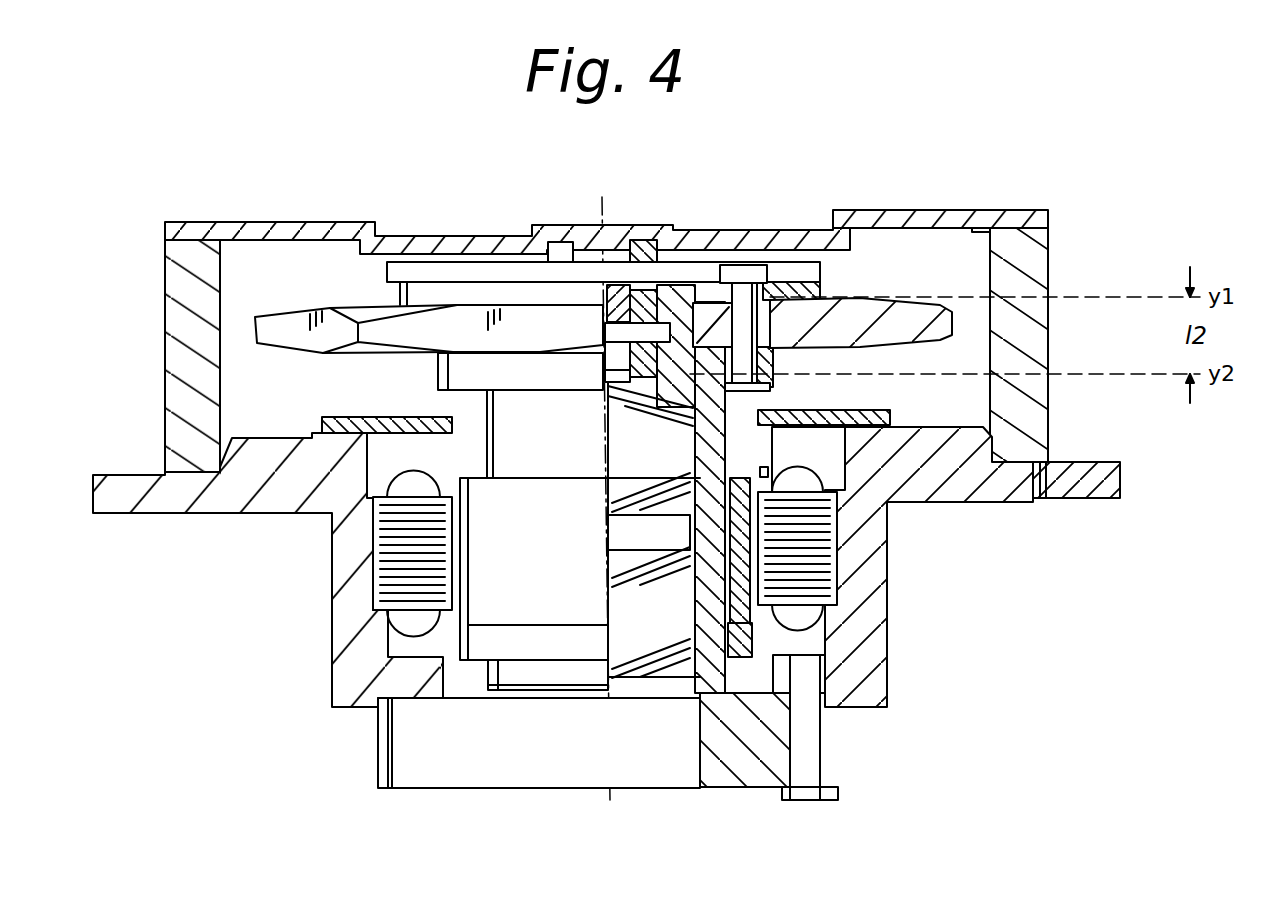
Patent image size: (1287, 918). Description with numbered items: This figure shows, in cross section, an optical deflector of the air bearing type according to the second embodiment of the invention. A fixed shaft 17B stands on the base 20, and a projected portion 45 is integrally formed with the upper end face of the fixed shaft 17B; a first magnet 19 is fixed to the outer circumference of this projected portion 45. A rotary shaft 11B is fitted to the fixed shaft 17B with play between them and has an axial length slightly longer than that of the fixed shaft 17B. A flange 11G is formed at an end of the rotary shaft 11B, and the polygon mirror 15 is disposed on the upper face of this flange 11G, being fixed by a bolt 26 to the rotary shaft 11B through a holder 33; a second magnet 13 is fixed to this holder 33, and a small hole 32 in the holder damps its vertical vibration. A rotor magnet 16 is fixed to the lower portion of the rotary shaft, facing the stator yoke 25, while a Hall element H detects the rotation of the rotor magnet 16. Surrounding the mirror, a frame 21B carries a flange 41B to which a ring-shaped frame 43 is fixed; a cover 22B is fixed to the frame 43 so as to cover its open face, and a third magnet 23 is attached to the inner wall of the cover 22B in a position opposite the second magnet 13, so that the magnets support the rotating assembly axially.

The cover 22B is at (315, 227).
The frame 43 is at (1033, 272).
The flange 41B is at (1120, 480).
The frame 21B is at (863, 545).
The fixed shaft 17B is at (612, 455).
The Hall element H is at (807, 572).
The rotor magnet 16 is at (697, 580).
The base 20 is at (518, 763).
The stator yoke 25 is at (840, 493).
The rotary shaft 11B is at (723, 445).
The second magnet 13 is at (653, 300).
The first magnet 19 is at (678, 370).
The small hole 32 is at (605, 292).
The third magnet 23 is at (647, 240).
The holder 33 is at (812, 292).
The bolt 26 is at (743, 272).
The flange 11G is at (760, 387).
The polygon mirror 15 is at (922, 313).
The projected portion 45 is at (600, 380).